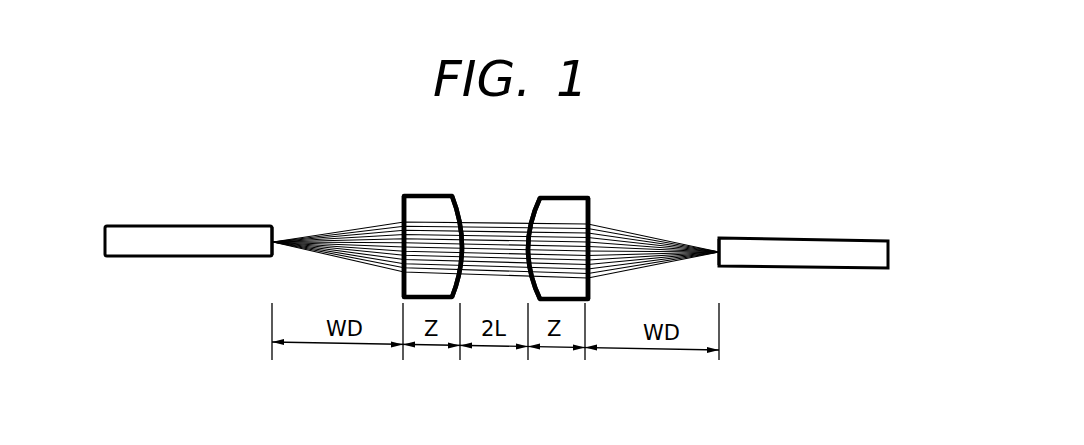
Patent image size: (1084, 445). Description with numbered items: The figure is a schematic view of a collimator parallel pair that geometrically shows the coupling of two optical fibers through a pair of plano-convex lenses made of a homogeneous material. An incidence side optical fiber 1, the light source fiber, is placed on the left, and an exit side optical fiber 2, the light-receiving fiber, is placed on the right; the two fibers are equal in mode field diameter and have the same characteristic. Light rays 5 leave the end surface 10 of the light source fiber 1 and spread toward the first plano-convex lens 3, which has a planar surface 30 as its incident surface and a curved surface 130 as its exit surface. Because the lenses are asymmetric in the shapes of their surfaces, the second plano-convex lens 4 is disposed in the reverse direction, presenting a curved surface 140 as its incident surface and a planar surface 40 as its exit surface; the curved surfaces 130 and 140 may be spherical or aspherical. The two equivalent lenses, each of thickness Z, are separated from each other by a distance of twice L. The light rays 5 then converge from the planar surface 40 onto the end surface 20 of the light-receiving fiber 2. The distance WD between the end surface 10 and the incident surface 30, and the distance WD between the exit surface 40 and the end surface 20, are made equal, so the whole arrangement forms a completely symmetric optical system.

The incidence side optical fiber 1 is at (181, 237).
The end surface of the light source fiber 10 is at (277, 228).
The light rays 5 is at (345, 247).
The first plano-convex lens 3 is at (425, 207).
The planar surface of the first lens 30 is at (403, 213).
The curved surface of the first lens 130 is at (462, 215).
The second plano-convex lens 4 is at (565, 210).
The curved surface of the second lens 140 is at (530, 215).
The planar surface of the second lens 40 is at (590, 215).
The end surface of the light-receiving fiber 20 is at (717, 240).
The exit side optical fiber 2 is at (786, 250).